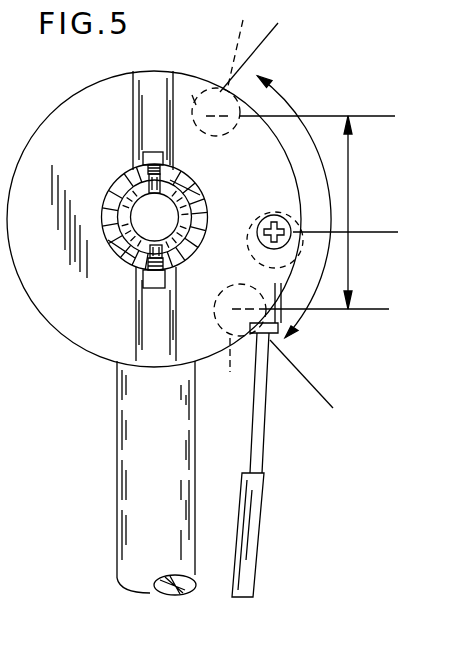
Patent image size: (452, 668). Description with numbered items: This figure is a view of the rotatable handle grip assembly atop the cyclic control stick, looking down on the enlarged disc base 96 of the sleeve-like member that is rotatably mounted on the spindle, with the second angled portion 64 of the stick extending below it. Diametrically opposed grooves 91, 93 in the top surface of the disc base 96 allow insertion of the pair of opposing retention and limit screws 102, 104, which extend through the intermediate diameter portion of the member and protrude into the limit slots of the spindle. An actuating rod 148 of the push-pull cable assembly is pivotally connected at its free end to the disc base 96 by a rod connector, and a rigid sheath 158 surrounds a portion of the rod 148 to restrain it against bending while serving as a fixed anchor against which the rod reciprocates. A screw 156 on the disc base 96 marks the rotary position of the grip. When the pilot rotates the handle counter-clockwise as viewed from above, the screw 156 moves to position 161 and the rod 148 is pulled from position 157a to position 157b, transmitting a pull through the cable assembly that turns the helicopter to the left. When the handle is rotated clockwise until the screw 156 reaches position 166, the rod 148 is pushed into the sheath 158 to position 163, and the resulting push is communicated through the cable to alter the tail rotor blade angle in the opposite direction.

The groove 91 is at (138, 342).
The groove 93 is at (160, 78).
The disc base 96 is at (198, 82).
The retention and limit screw 102 is at (150, 154).
The retention and limit screw 104 is at (153, 290).
The second angled portion 64 is at (117, 475).
The screw 156 is at (268, 214).
The position 161 is at (235, 69).
The position 166 is at (238, 340).
The position 157a is at (388, 232).
The position 157b is at (380, 116).
The position 163 is at (376, 309).
The actuating rod 148 is at (262, 420).
The rigid sheath 158 is at (255, 525).